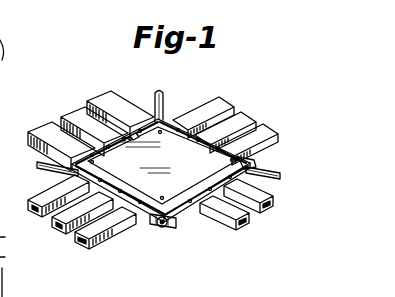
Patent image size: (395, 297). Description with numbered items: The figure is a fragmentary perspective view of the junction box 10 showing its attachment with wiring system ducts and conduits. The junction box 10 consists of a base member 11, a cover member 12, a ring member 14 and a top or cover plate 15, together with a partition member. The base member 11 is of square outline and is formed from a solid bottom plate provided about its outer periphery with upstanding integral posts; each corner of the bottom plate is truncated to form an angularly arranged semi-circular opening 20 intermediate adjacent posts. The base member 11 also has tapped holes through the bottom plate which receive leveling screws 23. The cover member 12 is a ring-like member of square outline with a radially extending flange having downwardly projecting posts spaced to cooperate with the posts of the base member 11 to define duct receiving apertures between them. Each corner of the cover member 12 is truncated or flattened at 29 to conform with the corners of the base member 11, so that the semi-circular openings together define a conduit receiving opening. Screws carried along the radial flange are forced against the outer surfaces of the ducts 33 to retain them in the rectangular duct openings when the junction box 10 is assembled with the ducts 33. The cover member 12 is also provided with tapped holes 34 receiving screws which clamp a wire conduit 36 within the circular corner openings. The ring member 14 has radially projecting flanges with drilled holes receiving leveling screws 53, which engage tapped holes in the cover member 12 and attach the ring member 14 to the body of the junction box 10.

The junction box 10 is at (185, 106).
The base member 11 is at (175, 228).
The cover member 12 is at (256, 166).
The ring member 14 is at (143, 125).
The top or cover plate 15 is at (250, 117).
The opening 20 is at (159, 228).
The leveling screws 23 is at (87, 106).
The truncated corner 29 is at (12, 274).
The ducts 33 is at (145, 167).
The tapped holes 34 is at (12, 240).
The wire conduit 36 is at (157, 110).
The leveling screws 53 is at (9, 66).